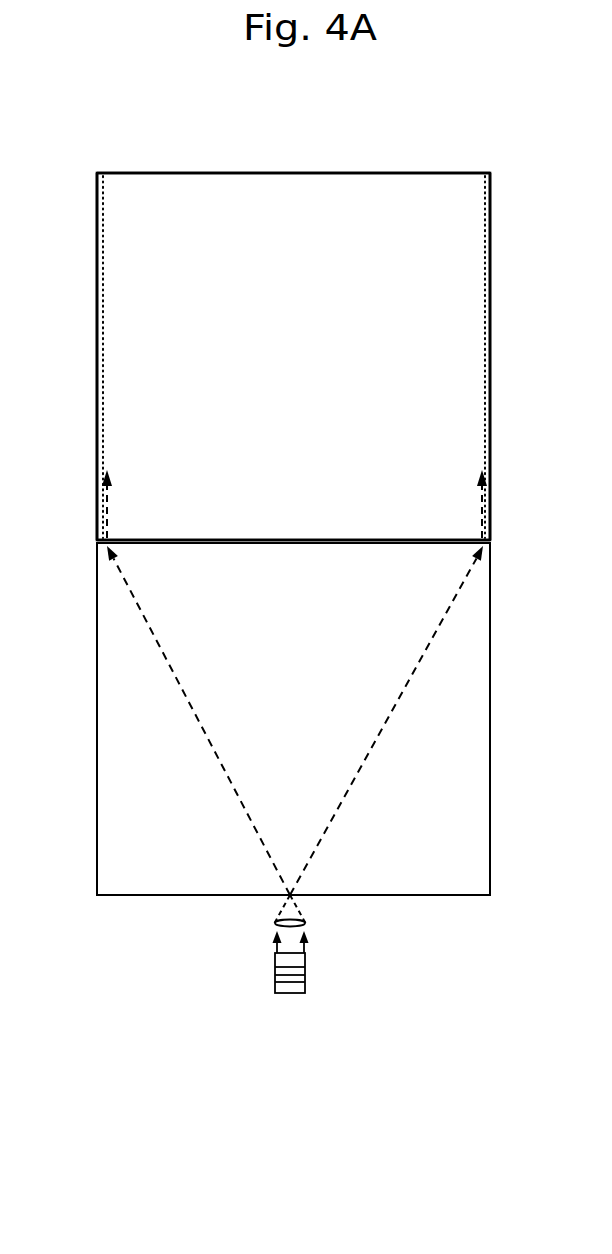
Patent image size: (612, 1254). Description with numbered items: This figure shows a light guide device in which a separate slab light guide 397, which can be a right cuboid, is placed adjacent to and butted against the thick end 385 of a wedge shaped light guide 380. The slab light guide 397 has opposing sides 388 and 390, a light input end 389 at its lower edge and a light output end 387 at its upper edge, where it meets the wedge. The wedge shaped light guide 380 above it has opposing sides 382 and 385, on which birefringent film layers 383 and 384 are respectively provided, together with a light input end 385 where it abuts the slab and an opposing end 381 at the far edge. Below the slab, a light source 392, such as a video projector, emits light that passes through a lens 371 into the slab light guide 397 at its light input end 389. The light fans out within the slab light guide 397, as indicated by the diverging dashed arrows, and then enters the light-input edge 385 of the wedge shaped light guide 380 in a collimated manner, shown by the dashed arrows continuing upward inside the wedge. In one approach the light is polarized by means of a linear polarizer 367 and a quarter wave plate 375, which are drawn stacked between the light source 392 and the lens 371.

The wedge shaped light guide 380 is at (308, 366).
The opposing end 381 is at (221, 172).
The side of light guide 382 is at (97, 200).
The birefringent film layer 383 is at (103, 247).
The birefringent film layer 384 is at (485, 247).
The thick end / light input end 385 is at (492, 200).
The light output end 387 is at (300, 545).
The side of slab light guide 388 is at (97, 864).
The light input end 389 is at (396, 894).
The side of slab light guide 390 is at (492, 862).
The slab light guide 397 is at (312, 726).
The lens 371 is at (274, 922).
The quarter wave plate 375 is at (275, 966).
The linear polarizer 367 is at (275, 975).
The light source 392 is at (275, 990).